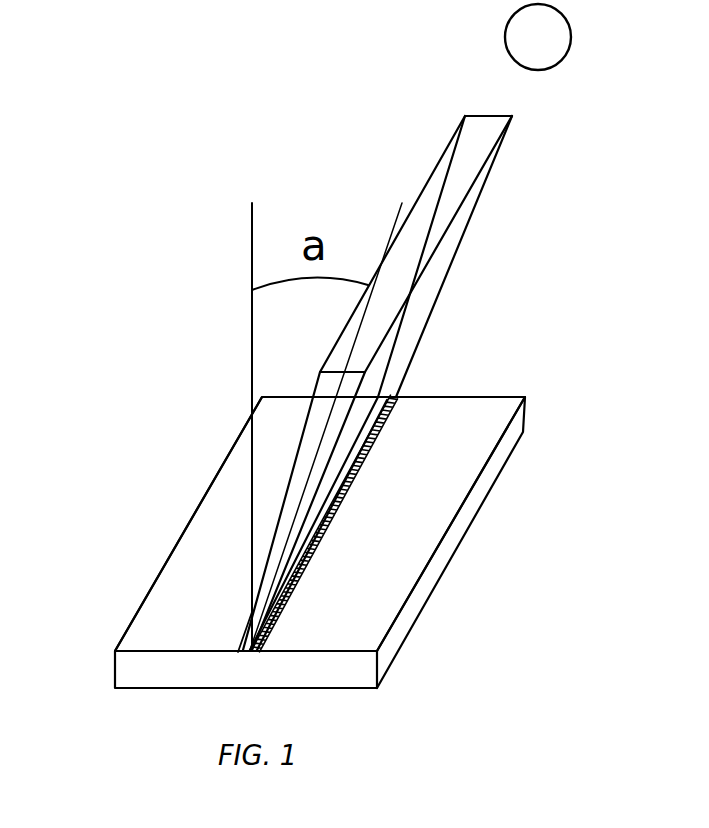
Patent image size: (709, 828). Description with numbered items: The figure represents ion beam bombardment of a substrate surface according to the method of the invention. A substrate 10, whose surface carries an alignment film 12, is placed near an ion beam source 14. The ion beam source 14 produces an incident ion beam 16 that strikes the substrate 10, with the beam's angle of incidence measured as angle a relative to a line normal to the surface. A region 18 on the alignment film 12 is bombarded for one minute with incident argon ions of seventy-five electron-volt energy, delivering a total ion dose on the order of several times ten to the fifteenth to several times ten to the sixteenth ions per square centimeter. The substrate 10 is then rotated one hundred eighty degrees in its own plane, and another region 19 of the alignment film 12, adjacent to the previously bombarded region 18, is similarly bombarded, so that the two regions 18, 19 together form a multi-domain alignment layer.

The substrate 10 is at (467, 518).
The alignment film 12 is at (473, 427).
The ion beam source 14 is at (571, 36).
The incident ion beam 16 is at (440, 268).
The region 18 is at (376, 440).
The another region 19 is at (243, 645).